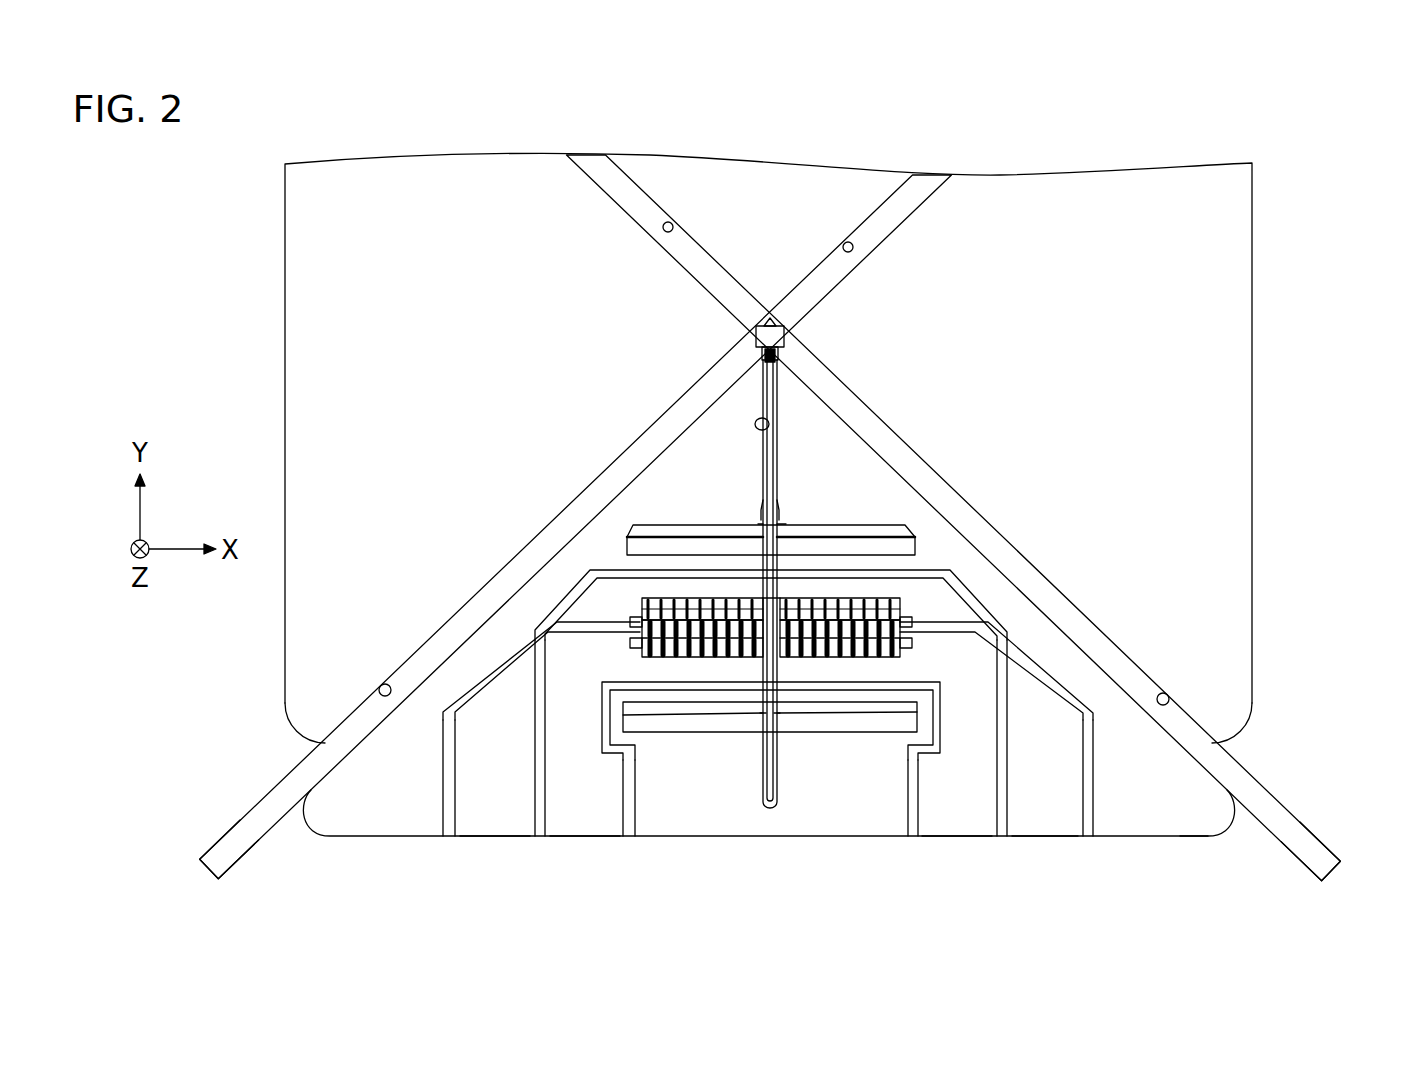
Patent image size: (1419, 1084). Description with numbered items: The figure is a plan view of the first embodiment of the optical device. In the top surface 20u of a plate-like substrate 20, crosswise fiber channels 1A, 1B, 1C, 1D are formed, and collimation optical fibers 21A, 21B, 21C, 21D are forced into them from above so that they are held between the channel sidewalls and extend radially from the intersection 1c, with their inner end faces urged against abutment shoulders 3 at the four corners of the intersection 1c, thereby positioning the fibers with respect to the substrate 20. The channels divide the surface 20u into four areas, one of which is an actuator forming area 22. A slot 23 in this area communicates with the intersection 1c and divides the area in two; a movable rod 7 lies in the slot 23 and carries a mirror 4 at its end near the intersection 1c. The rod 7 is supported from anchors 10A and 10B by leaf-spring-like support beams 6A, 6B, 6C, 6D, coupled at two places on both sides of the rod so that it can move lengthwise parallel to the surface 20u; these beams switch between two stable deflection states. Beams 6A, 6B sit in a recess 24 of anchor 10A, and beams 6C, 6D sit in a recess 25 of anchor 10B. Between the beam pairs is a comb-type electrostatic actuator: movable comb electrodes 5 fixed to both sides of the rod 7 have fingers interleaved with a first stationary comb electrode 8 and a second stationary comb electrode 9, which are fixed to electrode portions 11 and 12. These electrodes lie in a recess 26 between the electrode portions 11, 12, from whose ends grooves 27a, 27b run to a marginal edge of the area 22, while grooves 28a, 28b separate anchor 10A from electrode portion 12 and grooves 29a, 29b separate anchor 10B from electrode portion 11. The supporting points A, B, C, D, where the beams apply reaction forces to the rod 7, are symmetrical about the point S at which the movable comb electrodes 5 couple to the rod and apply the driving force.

The plate-like substrate 20 is at (1253, 282).
The top surface of substrate 20u is at (1210, 392).
The optical fiber 21C is at (598, 162).
The optical fiber 21D is at (928, 182).
The optical fiber 21A is at (253, 806).
The optical fiber 21B is at (1282, 813).
The fiber channel 1A is at (380, 689).
The fiber channel 1B is at (1168, 698).
The fiber channel 1C is at (668, 222).
The fiber channel 1D is at (848, 242).
The intersection of channels 1c is at (756, 333).
The abutment shoulder 3 is at (760, 353).
The mirror 4 is at (782, 328).
The slot 23 is at (772, 415).
The movable rod 7 is at (762, 517).
The supporting point A is at (762, 524).
The supporting point B is at (786, 524).
The recess 24 is at (905, 527).
The support beam 6A is at (653, 527).
The support beam 6B is at (852, 528).
The second stationary comb electrode 9 is at (905, 600).
The groove 27a is at (540, 838).
The groove 27b is at (998, 838).
The first stationary comb electrode 8 is at (905, 646).
The groove 28a is at (449, 838).
The groove 28b is at (1090, 838).
The movable comb electrode 5 is at (640, 614).
The recess 26 is at (640, 644).
The point of application of driving force S is at (765, 600).
The anchor 10B is at (737, 838).
The groove 29a is at (627, 838).
The groove 29b is at (910, 838).
The recess 25 is at (880, 735).
The support beam 6C is at (677, 713).
The support beam 6D is at (843, 713).
The supporting point C is at (763, 714).
The supporting point D is at (778, 714).
The anchor 10A is at (383, 838).
The electrode portion 11 is at (580, 838).
The electrode portion 12 is at (497, 838).
The actuator forming area 22 is at (1197, 838).